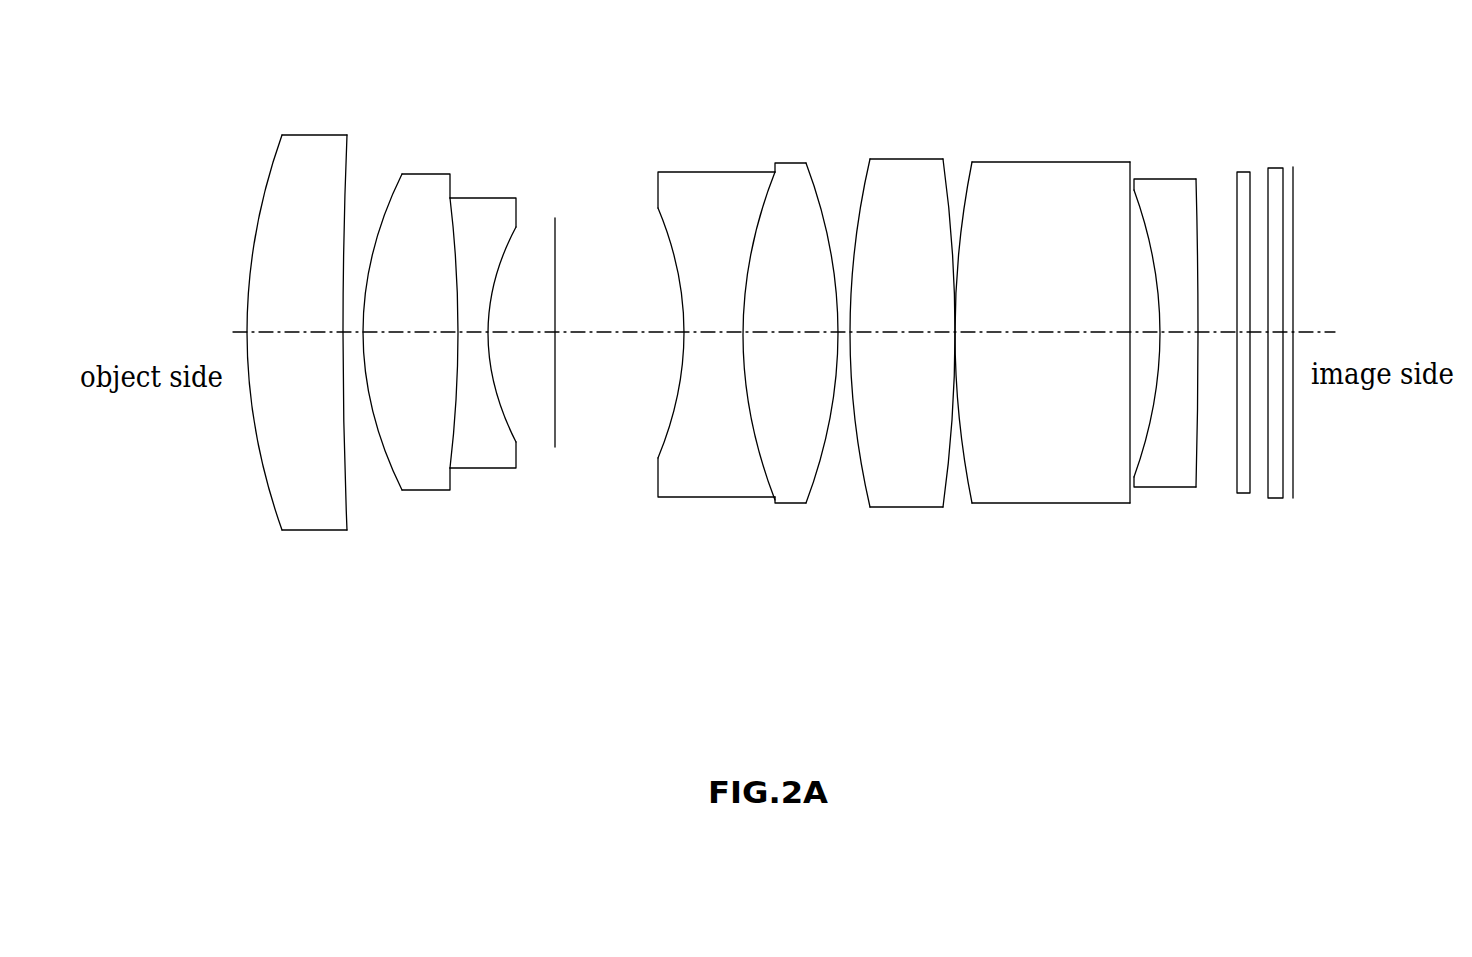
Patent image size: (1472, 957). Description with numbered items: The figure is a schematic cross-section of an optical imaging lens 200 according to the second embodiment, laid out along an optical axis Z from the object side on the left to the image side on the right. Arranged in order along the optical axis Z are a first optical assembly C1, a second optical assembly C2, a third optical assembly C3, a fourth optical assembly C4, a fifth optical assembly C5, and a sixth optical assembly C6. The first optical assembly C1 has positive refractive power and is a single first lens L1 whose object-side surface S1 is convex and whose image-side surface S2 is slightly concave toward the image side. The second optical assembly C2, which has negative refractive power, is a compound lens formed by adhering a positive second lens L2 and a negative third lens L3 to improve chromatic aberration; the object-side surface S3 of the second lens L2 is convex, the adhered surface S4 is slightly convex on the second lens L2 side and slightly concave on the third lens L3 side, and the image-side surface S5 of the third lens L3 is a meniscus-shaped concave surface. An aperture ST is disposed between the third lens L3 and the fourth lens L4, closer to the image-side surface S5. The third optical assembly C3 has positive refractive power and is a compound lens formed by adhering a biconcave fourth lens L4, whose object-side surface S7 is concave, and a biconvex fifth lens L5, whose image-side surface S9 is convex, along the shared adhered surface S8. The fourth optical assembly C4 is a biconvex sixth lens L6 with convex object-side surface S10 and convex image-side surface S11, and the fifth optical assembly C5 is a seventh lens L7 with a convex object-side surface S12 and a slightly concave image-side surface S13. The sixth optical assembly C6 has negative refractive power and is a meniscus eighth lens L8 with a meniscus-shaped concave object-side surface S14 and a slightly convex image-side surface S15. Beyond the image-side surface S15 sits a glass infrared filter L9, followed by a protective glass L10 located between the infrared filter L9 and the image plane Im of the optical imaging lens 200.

The optical imaging lens 200 is at (225, 246).
The first optical assembly C1 is at (243, 165).
The second optical assembly C2 is at (473, 153).
The third optical assembly C3 is at (753, 143).
The fourth optical assembly C4 is at (881, 124).
The fifth optical assembly C5 is at (1004, 142).
The sixth optical assembly C6 is at (1125, 143).
The first lens L1 is at (303, 152).
The second lens L2 is at (417, 192).
The third lens L3 is at (505, 215).
The fourth lens L4 is at (702, 188).
The fifth lens L5 is at (785, 175).
The sixth lens L6 is at (895, 183).
The seventh lens L7 is at (1043, 183).
The eighth lens L8 is at (1162, 190).
The infrared filter L9 is at (1243, 178).
The protective glass L10 is at (1281, 174).
The aperture ST is at (558, 225).
The image plane Im is at (1293, 228).
The optical axis Z is at (766, 334).
The object-side surface of the first lens S1 is at (268, 488).
The image-side surface of the first lens S2 is at (350, 499).
The object-side surface of the second lens S3 is at (390, 463).
The adhered surface between the second and third lenses S4 is at (453, 418).
The image-side surface of the third lens S5 is at (507, 407).
The object-side surface of the fourth lens S7 is at (668, 430).
The adhered surface between the fourth and fifth lenses S8 is at (758, 447).
The image-side surface of the fifth lens S9 is at (820, 462).
The object-side surface of the sixth lens S10 is at (860, 468).
The image-side surface of the sixth lens S11 is at (950, 488).
The object-side surface of the seventh lens S12 is at (963, 467).
The image-side surface of the seventh lens S13 is at (1130, 443).
The object-side surface of the eighth lens S14 is at (1155, 410).
The image-side surface of the eighth lens S15 is at (1195, 452).